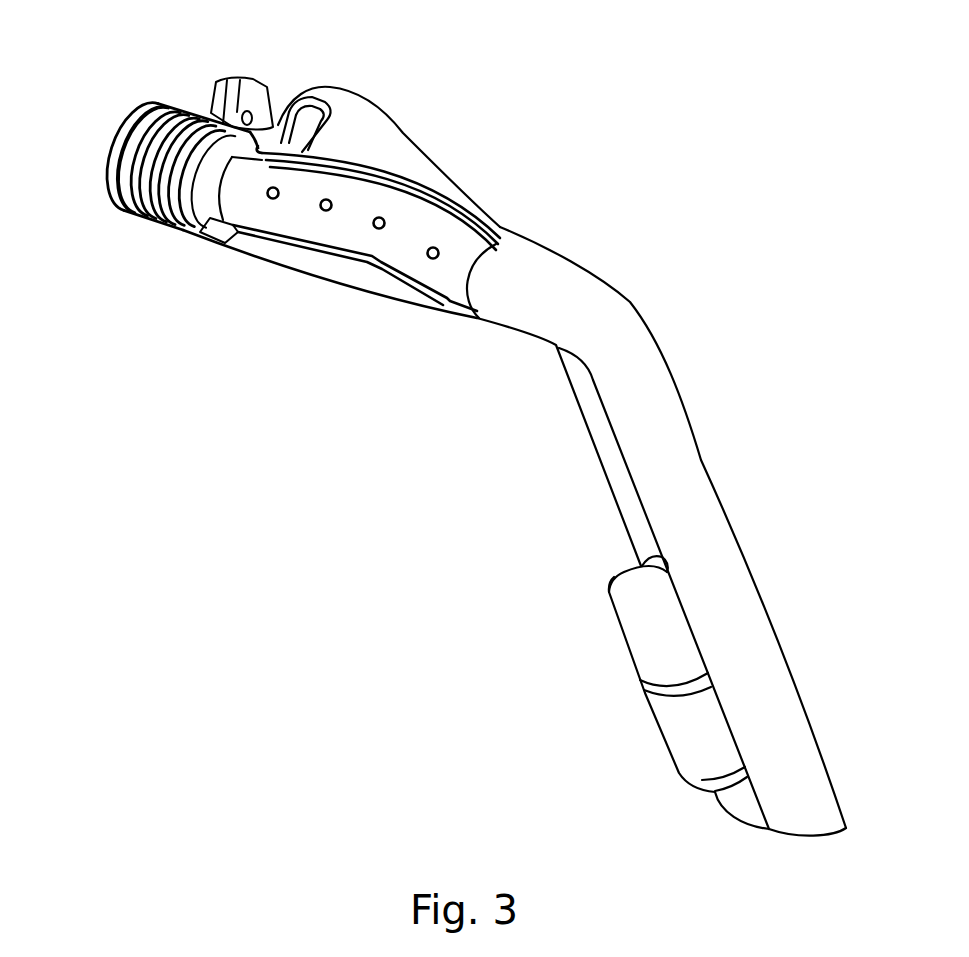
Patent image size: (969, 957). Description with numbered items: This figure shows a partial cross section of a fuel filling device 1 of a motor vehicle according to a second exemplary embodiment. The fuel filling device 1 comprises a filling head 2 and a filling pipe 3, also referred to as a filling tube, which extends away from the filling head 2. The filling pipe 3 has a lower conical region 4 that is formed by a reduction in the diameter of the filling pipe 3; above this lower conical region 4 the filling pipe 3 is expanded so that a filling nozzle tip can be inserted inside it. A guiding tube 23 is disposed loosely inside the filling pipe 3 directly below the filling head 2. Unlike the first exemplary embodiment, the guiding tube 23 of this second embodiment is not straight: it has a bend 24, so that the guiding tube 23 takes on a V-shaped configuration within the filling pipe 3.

The fuel filling device 1 is at (449, 119).
The filling head 2 is at (127, 149).
The filling pipe 3 is at (603, 320).
The lower conical region 4 is at (480, 318).
The guiding tube 23 is at (463, 244).
The bend 24 is at (368, 257).